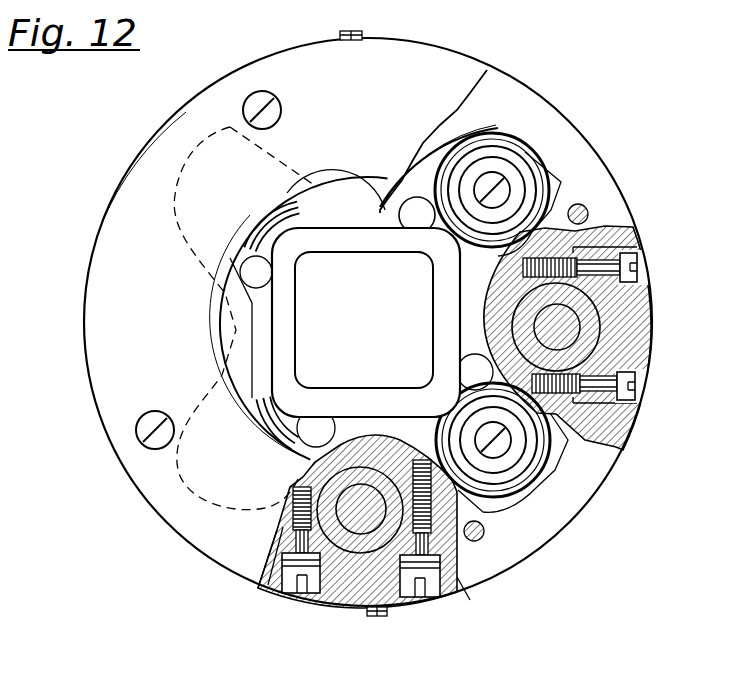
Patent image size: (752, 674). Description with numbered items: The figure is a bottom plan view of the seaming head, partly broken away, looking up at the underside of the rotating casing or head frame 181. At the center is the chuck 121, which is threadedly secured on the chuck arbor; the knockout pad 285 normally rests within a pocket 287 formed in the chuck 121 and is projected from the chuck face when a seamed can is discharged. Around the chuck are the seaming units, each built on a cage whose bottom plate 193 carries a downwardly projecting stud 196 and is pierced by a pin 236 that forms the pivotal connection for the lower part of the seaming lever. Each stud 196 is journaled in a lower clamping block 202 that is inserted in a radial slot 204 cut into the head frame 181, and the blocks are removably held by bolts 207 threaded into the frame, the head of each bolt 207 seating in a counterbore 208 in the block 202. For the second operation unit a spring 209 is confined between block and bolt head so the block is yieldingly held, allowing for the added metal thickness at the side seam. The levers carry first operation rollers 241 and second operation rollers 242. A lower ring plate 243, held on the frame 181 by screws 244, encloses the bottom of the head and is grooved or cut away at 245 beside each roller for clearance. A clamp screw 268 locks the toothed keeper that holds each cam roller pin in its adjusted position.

The chuck 121 is at (366, 322).
The head frame 181 is at (566, 130).
The bottom plate 193 is at (412, 187).
The stud 196 is at (582, 333).
The lower clamping block 202 is at (628, 323).
The slot 204 is at (626, 406).
The bolt 207 is at (640, 276).
The counterbore 208 is at (651, 264).
The spring 209 is at (456, 585).
The pin 236 is at (417, 215).
The first operation rollers 241 is at (532, 475).
The second operation rollers 242 is at (528, 176).
The lower ring plate 243 is at (184, 116).
The screws 244 is at (282, 111).
The groove 245 is at (181, 228).
The clamp screw 268 is at (351, 42).
The knockout pad 285 is at (364, 320).
The pocket 287 is at (350, 260).